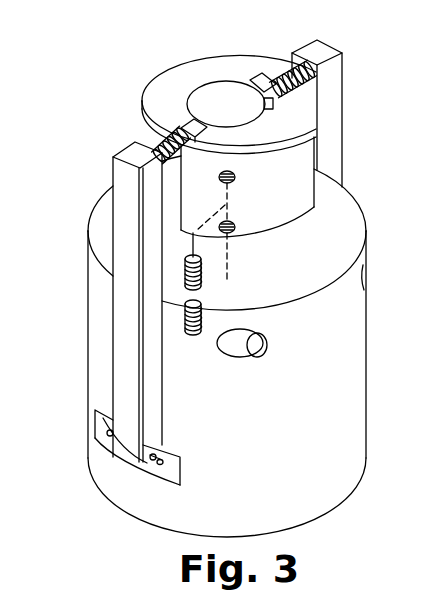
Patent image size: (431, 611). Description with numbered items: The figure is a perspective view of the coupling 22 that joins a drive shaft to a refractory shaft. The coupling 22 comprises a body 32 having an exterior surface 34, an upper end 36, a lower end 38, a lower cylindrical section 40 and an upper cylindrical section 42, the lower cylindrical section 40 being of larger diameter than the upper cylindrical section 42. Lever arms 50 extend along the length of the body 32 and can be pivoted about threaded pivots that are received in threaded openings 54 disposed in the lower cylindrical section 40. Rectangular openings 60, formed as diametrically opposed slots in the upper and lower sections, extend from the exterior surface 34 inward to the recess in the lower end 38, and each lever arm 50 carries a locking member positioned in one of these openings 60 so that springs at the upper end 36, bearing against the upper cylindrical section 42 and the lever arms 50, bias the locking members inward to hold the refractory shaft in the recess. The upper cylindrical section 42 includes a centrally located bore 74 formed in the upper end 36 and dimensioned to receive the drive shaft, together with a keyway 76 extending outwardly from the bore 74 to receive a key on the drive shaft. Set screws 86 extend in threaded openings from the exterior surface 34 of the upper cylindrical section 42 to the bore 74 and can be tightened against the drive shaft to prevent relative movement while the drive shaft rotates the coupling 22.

The coupling 22 is at (340, 225).
The body 32 is at (342, 323).
The exterior surface 34 is at (342, 149).
The upper end 36 is at (285, 178).
The lower end 38 is at (323, 492).
The lower cylindrical section 40 is at (103, 313).
The upper cylindrical section 42 is at (147, 135).
The lever arms 50 is at (127, 207).
The threaded openings 54 is at (258, 333).
The rectangular openings 60 is at (183, 124).
The bore 74 is at (227, 97).
The keyway 76 is at (266, 98).
The set screws 86 is at (185, 310).